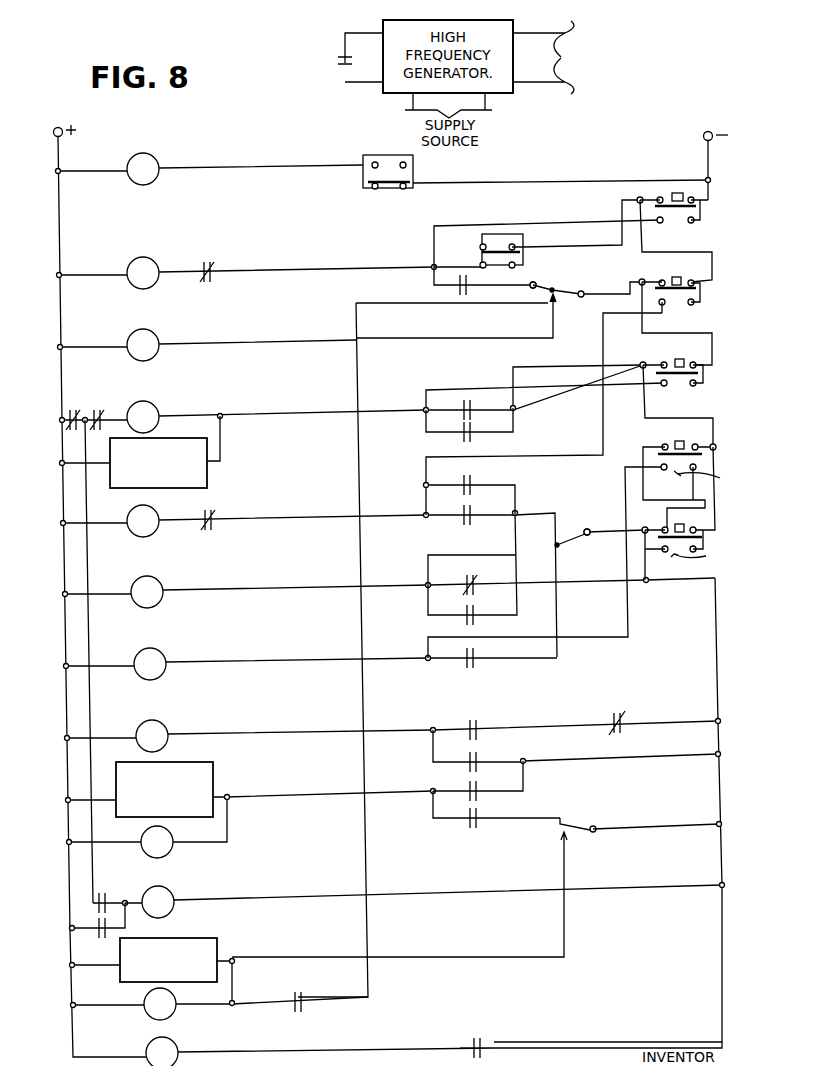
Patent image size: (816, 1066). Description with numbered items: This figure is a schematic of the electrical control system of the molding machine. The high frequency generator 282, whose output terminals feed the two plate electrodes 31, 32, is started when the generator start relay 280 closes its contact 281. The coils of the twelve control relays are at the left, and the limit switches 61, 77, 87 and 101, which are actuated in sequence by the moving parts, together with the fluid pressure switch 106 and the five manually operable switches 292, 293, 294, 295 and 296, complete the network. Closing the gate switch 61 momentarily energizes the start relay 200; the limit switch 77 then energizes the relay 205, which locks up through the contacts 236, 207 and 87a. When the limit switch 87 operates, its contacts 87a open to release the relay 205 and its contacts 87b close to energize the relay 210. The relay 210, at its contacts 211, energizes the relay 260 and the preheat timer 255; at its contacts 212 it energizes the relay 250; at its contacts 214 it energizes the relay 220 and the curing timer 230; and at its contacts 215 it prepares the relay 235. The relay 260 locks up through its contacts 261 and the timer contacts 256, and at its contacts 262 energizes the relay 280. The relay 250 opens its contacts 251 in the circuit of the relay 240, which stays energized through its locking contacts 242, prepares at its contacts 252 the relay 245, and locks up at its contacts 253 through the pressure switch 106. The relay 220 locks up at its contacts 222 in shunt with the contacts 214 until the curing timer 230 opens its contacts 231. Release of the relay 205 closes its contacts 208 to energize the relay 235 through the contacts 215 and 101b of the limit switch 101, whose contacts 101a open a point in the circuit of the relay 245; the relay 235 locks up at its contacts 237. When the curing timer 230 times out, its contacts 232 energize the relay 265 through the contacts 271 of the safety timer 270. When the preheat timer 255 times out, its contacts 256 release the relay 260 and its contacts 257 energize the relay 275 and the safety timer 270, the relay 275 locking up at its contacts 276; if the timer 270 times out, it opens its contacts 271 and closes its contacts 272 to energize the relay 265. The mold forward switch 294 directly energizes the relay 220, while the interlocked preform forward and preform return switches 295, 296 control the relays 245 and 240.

The high frequency generator 282 is at (383, 28).
The contacts of generator start relay 281 is at (336, 66).
The plate electrode 31 is at (565, 41).
The plate electrode 32 is at (562, 86).
The start relay 200 is at (152, 164).
The limit switch 61 is at (416, 179).
The relay 205 is at (152, 266).
The contacts of relay 235 236 is at (215, 270).
The limit switch 77 is at (472, 264).
The contacts of relay 205 207 is at (442, 285).
The relay 210 is at (154, 339).
The limit switch 87 is at (568, 298).
The contacts of limit switch 87 87a is at (560, 286).
The contacts of limit switch 87 87b is at (550, 306).
The relay 220 is at (161, 409).
The contacts of safety timer 271 is at (62, 418).
The normally closed contacts of curing timer 231 is at (102, 417).
The contacts of relay 210 214 is at (486, 388).
The locking contacts of relay 220 222 is at (464, 437).
The curing timer 230 is at (209, 468).
The relay 235 is at (154, 521).
The contacts of relay 205 208 is at (212, 512).
The contacts of relay 235 237 is at (462, 522).
The contacts of relay 210 215 is at (474, 484).
The limit switch 101 is at (578, 545).
The contacts of limit switch 101 101a is at (556, 548).
The contacts of limit switch 101 101b is at (580, 530).
The relay 240 is at (161, 588).
The contacts of relay 250 251 is at (464, 584).
The locking contacts of relay 240 242 is at (472, 612).
The relay 245 is at (163, 660).
The contacts of relay 250 252 is at (466, 668).
The relay 250 is at (163, 730).
The contacts of relay 250 253 is at (461, 722).
The fluid pressure switch 106 is at (620, 716).
The contacts of relay 210 212 is at (478, 760).
The preheat timer 255 is at (212, 772).
The contacts of relay 210 211 is at (477, 792).
The contacts of relay 260 261 is at (468, 833).
The contacts of preheat timer 256 is at (568, 822).
The contacts of preheat timer 257 is at (574, 842).
The relay 260 is at (171, 850).
The normally open contacts of curing timer 232 is at (118, 887).
The relay 265 is at (171, 894).
The contacts of safety timer 272 is at (68, 928).
The safety timer 270 is at (212, 934).
The relay 275 is at (173, 1010).
The contacts of relay 275 276 is at (304, 1002).
The generator start relay 280 is at (176, 1058).
The contacts of relay 260 262 is at (492, 1053).
The manually operable switch 292 is at (688, 185).
The manually operable switch 293 is at (687, 277).
The mold forward switch 294 is at (687, 366).
The preform forward switch 295 is at (689, 445).
The preform return switch 296 is at (675, 525).